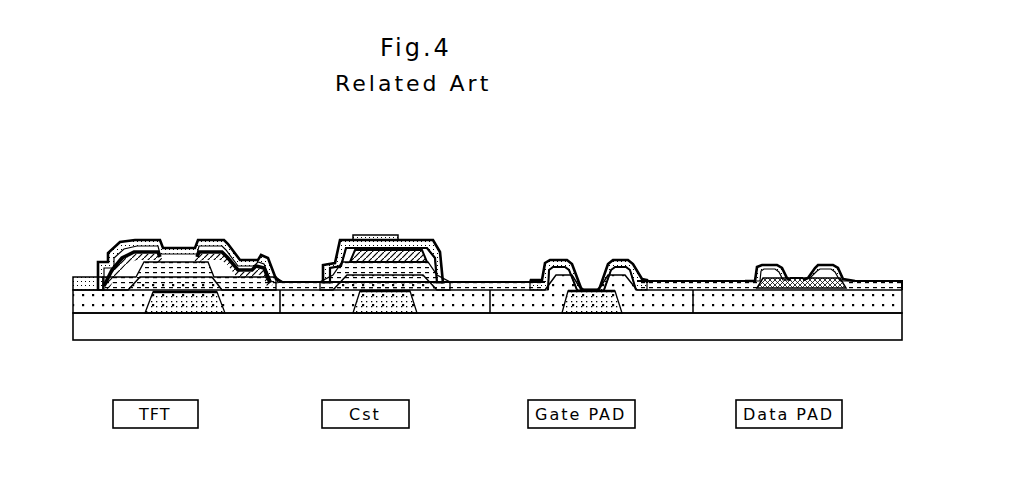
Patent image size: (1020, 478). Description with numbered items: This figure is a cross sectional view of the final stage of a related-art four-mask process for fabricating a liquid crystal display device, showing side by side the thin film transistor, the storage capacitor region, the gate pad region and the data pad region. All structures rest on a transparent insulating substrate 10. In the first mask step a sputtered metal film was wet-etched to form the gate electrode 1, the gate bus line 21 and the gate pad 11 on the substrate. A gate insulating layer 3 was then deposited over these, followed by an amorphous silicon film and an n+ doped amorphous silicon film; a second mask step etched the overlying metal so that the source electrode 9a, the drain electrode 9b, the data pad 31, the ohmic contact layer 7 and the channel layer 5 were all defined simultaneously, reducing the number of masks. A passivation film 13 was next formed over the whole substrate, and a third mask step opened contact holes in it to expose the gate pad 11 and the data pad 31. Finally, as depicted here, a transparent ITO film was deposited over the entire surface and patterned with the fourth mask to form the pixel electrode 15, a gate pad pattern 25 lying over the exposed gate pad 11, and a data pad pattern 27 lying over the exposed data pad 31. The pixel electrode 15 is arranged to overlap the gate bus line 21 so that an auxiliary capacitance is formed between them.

The gate electrode 1 is at (188, 312).
The gate insulating layer 3 is at (83, 301).
The channel layer 5 is at (92, 272).
The ohmic contact layer 7 is at (100, 260).
The source electrode 9a is at (144, 243).
The drain electrode 9b is at (216, 244).
The transparent insulating substrate 10 is at (85, 329).
The gate pad 11 is at (590, 305).
The passivation film 13 is at (118, 246).
The pixel electrode 15 is at (350, 236).
The gate bus line 21 is at (400, 313).
The gate pad pattern 25 is at (560, 260).
The data pad pattern 27 is at (760, 264).
The data pad 31 is at (803, 276).